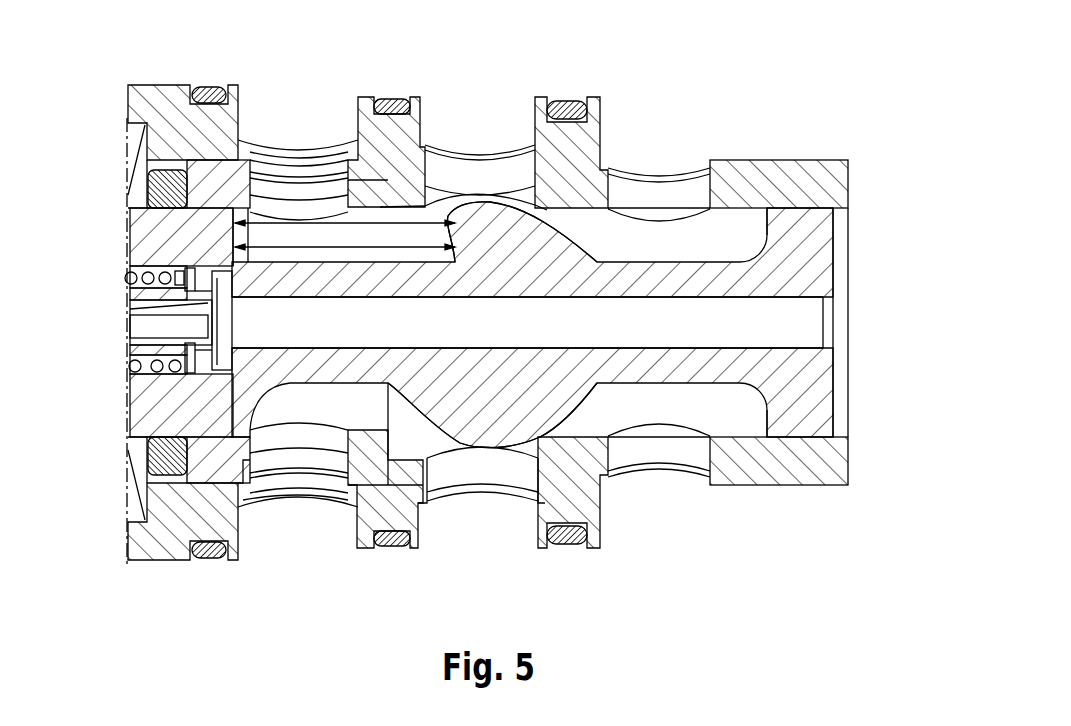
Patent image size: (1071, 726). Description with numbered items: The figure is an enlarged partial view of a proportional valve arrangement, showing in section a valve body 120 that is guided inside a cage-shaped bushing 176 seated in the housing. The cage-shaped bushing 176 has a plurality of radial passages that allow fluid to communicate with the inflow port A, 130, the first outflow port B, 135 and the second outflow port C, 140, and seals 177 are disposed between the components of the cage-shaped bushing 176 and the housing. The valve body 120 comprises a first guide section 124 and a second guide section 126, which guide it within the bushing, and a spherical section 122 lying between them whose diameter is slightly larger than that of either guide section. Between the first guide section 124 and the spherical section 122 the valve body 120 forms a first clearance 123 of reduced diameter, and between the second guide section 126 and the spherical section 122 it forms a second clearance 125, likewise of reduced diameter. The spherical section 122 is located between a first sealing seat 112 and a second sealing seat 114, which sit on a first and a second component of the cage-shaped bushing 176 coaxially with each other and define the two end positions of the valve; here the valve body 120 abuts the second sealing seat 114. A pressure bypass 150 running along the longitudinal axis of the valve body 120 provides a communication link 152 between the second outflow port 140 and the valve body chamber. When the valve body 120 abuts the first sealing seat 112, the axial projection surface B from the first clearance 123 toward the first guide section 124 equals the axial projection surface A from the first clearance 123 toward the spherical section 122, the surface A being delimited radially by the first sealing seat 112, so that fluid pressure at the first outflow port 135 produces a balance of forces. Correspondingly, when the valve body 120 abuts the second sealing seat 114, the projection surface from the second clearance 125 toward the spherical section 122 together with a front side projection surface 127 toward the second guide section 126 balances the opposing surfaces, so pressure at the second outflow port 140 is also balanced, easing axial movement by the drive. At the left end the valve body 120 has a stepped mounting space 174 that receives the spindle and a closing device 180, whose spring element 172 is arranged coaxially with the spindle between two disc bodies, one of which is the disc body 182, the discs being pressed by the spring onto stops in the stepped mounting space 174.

The first sealing seat 112 is at (438, 185).
The second sealing seat 114 is at (516, 192).
The valve body 120 is at (812, 278).
The spherical section 122 is at (547, 253).
The first clearance 123 is at (323, 233).
The first guide section 124 is at (150, 230).
The second clearance 125 is at (727, 233).
The second guide section 126 is at (812, 233).
The front side projection surface 127 is at (835, 401).
The inflow port 130 is at (524, 140).
The first outflow port 135 is at (297, 140).
The second outflow port 140 is at (687, 200).
The pressure bypass 150 is at (583, 336).
The communication link 152 is at (643, 336).
The spring element 172 is at (132, 278).
The stepped mounting space 174 is at (217, 370).
The cage-shaped bushing 176 is at (570, 503).
The seals 177 is at (207, 97).
The closing device 180 is at (130, 370).
The disc body 182 is at (197, 387).
The axial projection surface A is at (462, 237).
The axial projection surface B is at (233, 237).